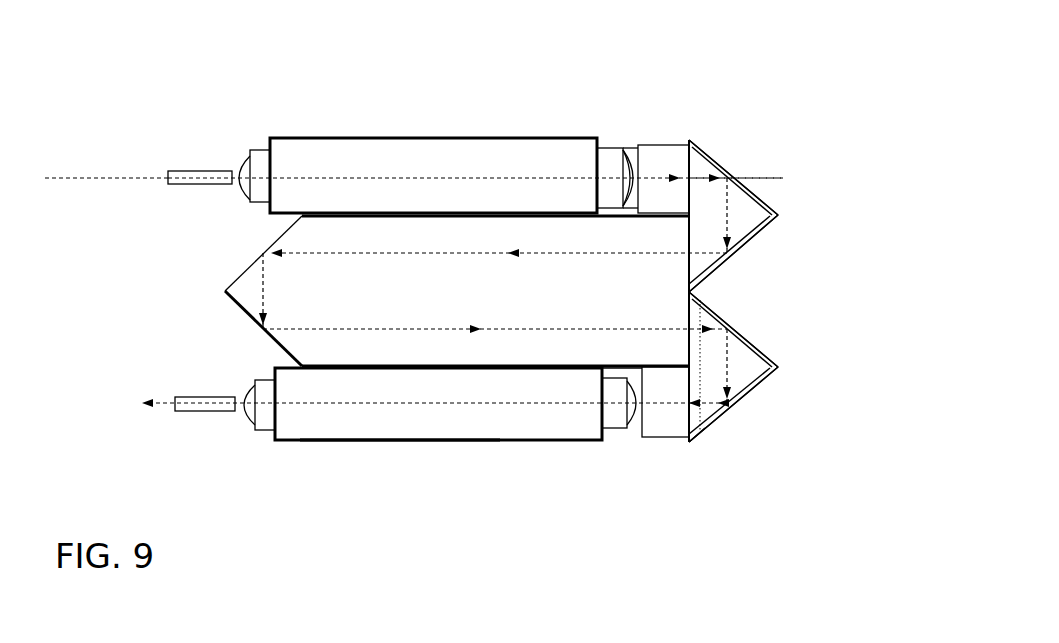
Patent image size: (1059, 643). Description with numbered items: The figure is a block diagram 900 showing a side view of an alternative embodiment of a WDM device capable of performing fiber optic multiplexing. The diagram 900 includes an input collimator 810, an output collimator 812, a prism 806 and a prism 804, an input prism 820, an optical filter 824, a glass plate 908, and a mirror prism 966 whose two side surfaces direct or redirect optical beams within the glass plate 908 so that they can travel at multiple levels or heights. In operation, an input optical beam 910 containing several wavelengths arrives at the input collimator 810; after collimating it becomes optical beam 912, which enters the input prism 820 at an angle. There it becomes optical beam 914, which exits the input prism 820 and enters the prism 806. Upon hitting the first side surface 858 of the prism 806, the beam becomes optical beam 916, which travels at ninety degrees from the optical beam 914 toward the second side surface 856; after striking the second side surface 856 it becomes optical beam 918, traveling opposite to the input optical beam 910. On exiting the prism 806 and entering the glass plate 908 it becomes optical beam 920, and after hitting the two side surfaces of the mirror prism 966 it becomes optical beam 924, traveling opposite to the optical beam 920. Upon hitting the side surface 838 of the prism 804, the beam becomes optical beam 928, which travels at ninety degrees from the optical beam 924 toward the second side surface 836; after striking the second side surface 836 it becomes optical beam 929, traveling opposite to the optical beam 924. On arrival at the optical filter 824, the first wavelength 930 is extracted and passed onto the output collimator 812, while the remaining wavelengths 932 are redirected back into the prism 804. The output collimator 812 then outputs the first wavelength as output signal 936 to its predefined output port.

The block diagram 900 is at (455, 541).
The input collimator 810 is at (452, 206).
The output collimator 812 is at (467, 428).
The input optical beam 910 is at (414, 176).
The optical beam 912 is at (623, 147).
The input prism 820 is at (647, 170).
The optical beam 914 is at (658, 177).
The optical beam 916 is at (753, 177).
The prism 806 is at (791, 216).
The first side surface 858 is at (716, 158).
The second side surface 856 is at (743, 247).
The optical beam 918 is at (732, 277).
The glass plate 908 is at (574, 306).
The mirror prism 966 is at (243, 267).
The optical beam 920 is at (445, 255).
The optical beam 924 is at (495, 318).
The prism 804 is at (805, 367).
The side surface 838 is at (743, 327).
The optical beam 928 is at (730, 357).
The second side surface 836 is at (735, 425).
The remaining wavelengths 932 is at (722, 445).
The first wavelength λ1 930 is at (697, 440).
The optical beam 929 is at (697, 440).
The output signal 936 is at (400, 441).
The optical filter 824 is at (663, 437).